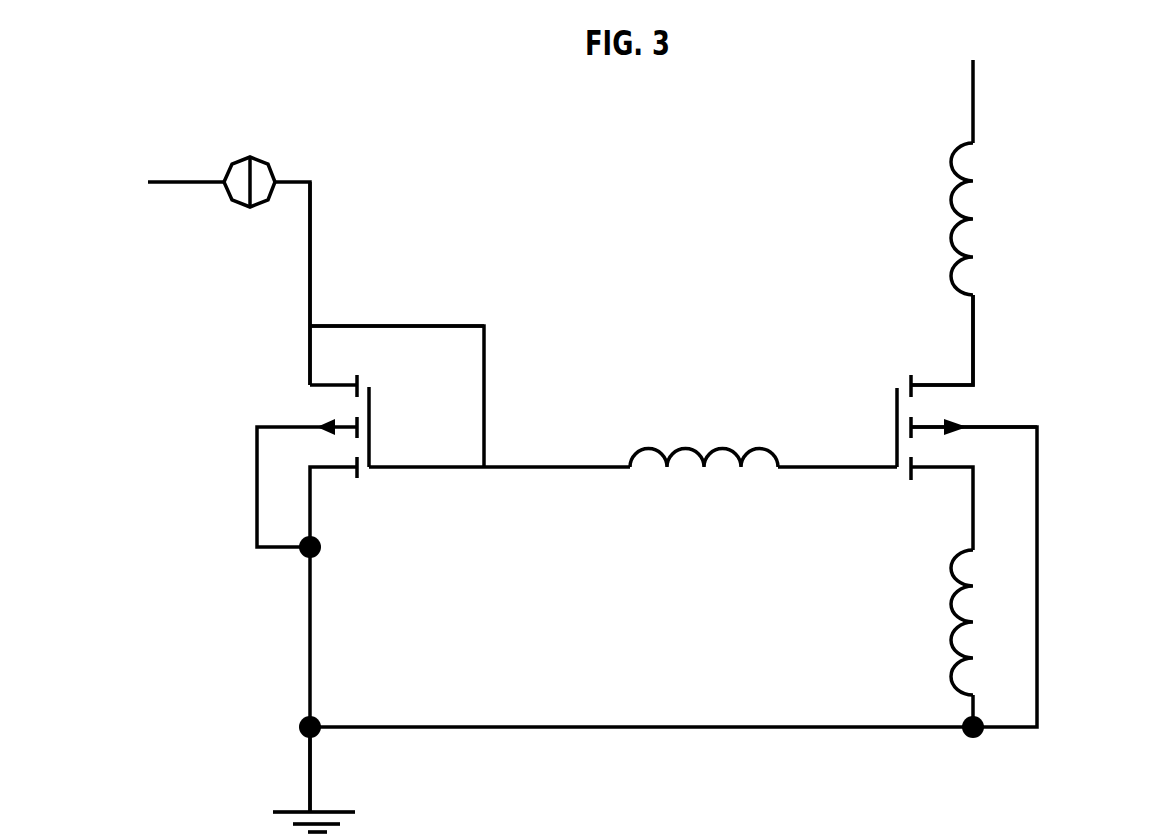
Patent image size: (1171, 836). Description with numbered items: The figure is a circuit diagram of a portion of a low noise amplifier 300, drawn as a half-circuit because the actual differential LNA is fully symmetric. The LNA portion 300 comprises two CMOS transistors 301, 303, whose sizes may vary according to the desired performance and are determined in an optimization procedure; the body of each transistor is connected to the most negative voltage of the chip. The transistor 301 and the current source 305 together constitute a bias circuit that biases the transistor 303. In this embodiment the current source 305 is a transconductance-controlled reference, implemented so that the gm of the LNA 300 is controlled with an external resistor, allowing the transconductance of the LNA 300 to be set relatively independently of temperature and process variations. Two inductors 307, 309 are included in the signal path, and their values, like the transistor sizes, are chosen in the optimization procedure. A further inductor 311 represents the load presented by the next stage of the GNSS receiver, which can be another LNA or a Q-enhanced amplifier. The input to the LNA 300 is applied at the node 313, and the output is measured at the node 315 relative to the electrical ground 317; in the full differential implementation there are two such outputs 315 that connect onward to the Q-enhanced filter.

The low noise amplifier portion 300 is at (1078, 142).
The CMOS transistor 301 is at (372, 427).
The CMOS transistor 303 is at (897, 405).
The current source 305 is at (250, 157).
The inductor 307 is at (709, 442).
The inductor 309 is at (946, 637).
The inductor 311 is at (946, 243).
The node 313 is at (310, 326).
The node 315 is at (973, 385).
The electrical ground 317 is at (273, 812).